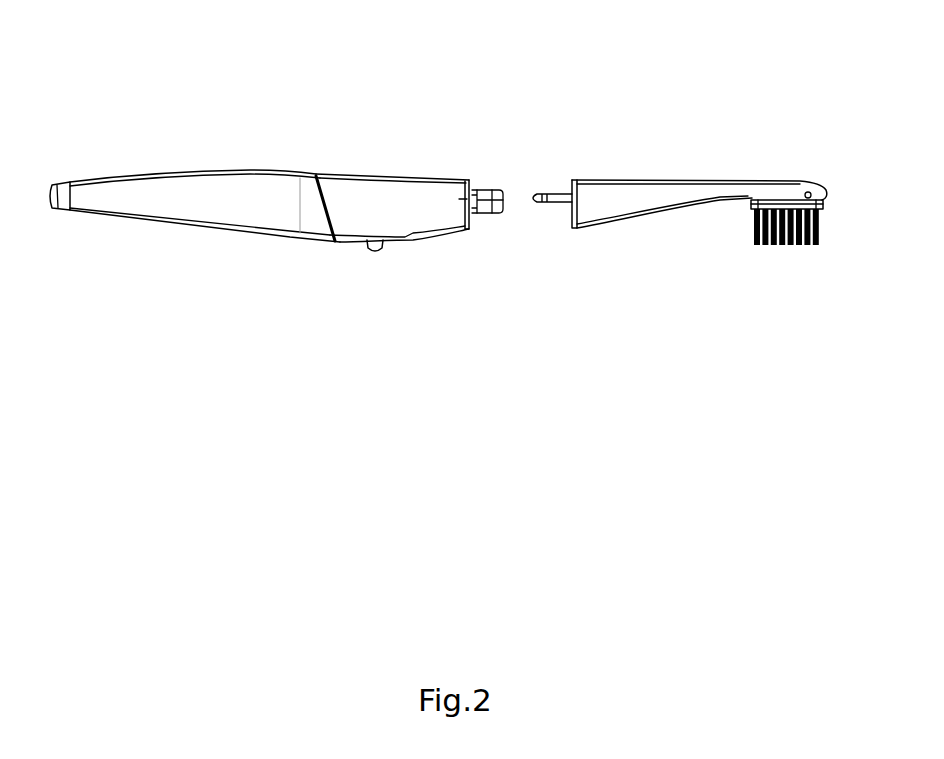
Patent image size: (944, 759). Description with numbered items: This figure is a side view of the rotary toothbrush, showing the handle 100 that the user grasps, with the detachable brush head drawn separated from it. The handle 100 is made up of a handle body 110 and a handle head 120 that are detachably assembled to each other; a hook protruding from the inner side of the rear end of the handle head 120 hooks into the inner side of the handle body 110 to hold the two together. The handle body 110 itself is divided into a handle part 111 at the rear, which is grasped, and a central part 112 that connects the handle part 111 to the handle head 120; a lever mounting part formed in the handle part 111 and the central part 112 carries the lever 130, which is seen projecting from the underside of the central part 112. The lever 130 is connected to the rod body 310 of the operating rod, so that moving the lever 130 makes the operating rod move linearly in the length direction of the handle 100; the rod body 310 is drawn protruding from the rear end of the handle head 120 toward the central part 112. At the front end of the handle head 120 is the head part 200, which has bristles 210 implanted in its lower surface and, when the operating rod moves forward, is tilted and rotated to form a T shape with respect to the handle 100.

The handle 100 is at (330, 74).
The handle body 110 is at (372, 113).
The handle part 111 is at (281, 188).
The central part 112 is at (376, 190).
The handle head 120 is at (595, 188).
The lever 130 is at (377, 258).
The head part 200 is at (826, 203).
The bristles 210 is at (783, 246).
The rod body 310 is at (554, 204).